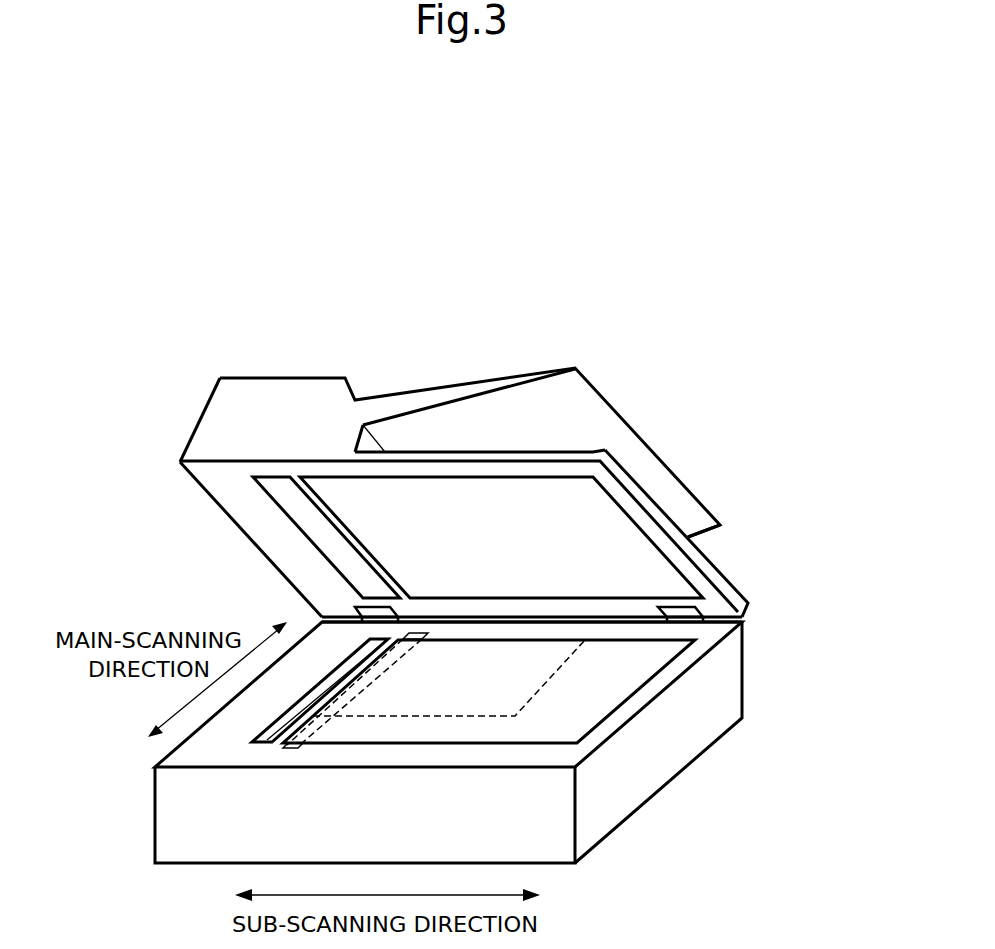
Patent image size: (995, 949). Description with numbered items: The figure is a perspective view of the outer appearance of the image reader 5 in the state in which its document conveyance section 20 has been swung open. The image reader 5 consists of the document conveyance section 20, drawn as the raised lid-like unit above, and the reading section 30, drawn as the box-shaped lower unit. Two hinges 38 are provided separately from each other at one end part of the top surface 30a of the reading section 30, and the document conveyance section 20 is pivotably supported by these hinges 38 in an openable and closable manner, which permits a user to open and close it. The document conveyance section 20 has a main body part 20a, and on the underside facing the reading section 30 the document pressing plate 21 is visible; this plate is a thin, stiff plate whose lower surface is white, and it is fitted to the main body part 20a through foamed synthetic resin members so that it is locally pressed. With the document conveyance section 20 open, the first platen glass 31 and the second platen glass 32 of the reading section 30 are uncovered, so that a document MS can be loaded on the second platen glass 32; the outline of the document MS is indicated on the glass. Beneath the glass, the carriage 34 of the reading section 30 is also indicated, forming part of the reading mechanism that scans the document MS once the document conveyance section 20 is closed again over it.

The image reader 5 is at (440, 340).
The document conveyance section 20 is at (727, 450).
The document pressing plate 21 is at (607, 512).
The main body part 20a is at (690, 533).
The hinges 38 is at (355, 608).
The reading section 30 is at (708, 787).
The top surface 30a is at (705, 636).
The second platen glass 32 is at (600, 692).
The first platen glass 31 is at (252, 742).
The carriage 34 is at (289, 750).
The document MS is at (457, 718).